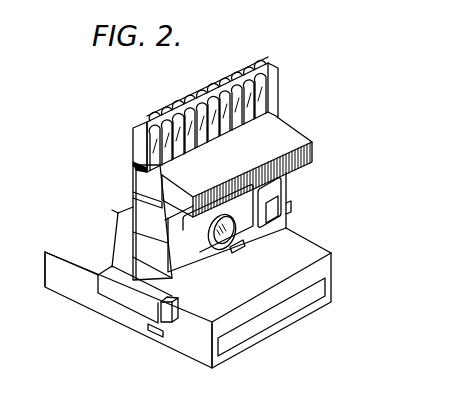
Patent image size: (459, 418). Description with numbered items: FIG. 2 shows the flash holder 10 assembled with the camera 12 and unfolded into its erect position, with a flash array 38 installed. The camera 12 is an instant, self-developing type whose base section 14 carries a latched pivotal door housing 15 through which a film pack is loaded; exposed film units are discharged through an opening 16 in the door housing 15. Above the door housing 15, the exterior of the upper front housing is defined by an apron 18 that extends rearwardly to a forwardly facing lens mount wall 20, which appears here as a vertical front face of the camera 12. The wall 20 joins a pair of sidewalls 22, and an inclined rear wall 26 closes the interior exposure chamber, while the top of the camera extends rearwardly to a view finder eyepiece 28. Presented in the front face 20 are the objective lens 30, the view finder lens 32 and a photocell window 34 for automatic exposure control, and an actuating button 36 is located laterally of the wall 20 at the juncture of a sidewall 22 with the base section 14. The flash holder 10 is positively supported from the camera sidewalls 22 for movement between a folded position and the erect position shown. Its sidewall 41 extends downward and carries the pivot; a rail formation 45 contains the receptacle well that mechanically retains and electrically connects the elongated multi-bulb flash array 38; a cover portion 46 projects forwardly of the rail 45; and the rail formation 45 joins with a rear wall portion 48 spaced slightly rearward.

The flash holder 10 is at (310, 113).
The camera 12 is at (109, 317).
The base section 14 is at (63, 278).
The door housing 15 is at (188, 340).
The opening 16 is at (253, 330).
The apron 18 is at (318, 254).
The lens mount wall 20 is at (290, 209).
The sidewalls 22 is at (112, 243).
The inclined rear wall 26 is at (130, 215).
The view finder eyepiece 28 is at (224, 111).
The objective lens 30 is at (218, 248).
The view finder lens 32 is at (268, 222).
The photocell window 34 is at (242, 252).
The actuating button 36 is at (163, 338).
The flash array 38 is at (263, 83).
The sidewall 41 is at (156, 228).
The rail formation 45 is at (237, 167).
The cover portion 46 is at (222, 170).
The rear wall portion 48 is at (137, 187).